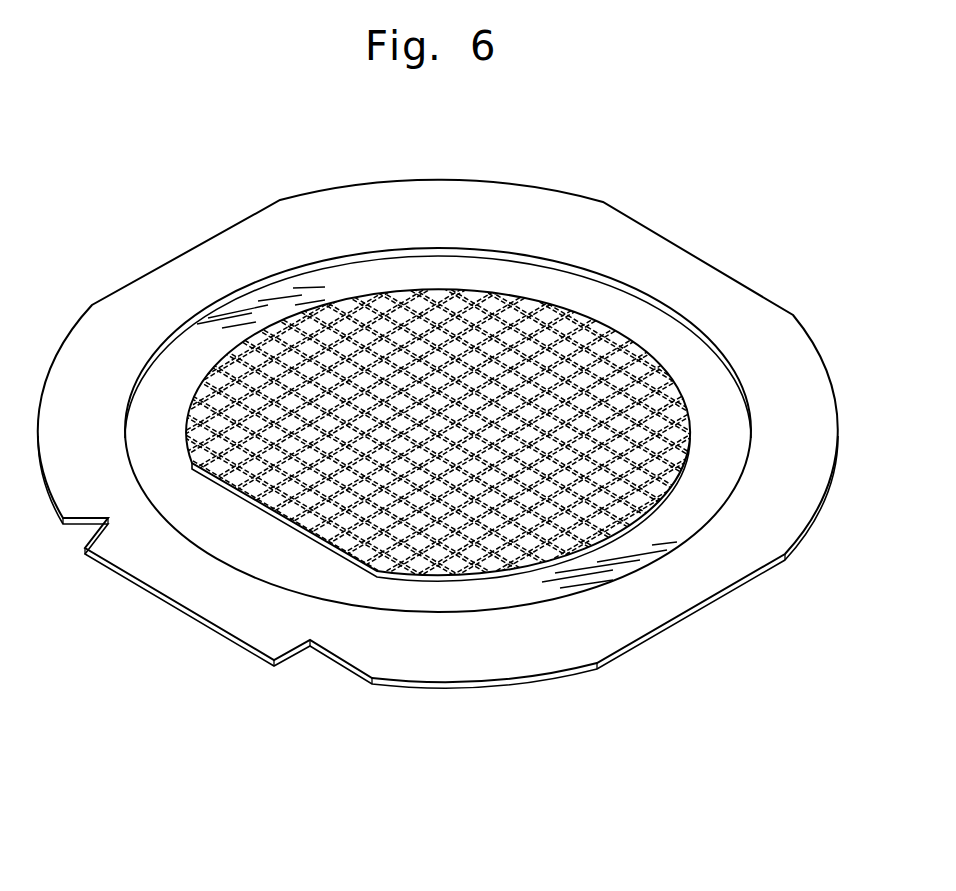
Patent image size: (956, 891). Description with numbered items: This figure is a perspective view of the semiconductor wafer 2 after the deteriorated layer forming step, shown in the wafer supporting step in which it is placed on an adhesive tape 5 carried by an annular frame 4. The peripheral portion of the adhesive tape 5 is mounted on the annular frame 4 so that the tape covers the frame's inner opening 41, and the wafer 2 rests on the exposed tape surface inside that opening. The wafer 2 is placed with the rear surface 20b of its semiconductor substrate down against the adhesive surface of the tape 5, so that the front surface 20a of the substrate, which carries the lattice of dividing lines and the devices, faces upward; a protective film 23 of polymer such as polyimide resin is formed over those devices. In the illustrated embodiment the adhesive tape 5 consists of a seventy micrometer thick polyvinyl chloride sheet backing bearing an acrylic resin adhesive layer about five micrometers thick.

The semiconductor wafer 2 is at (506, 289).
The annular frame 4 is at (790, 370).
The adhesive tape 5 is at (173, 378).
The front surface 20a is at (597, 330).
The rear surface 20b is at (488, 578).
The protective film 23 is at (297, 327).
The inner opening 41 is at (382, 252).